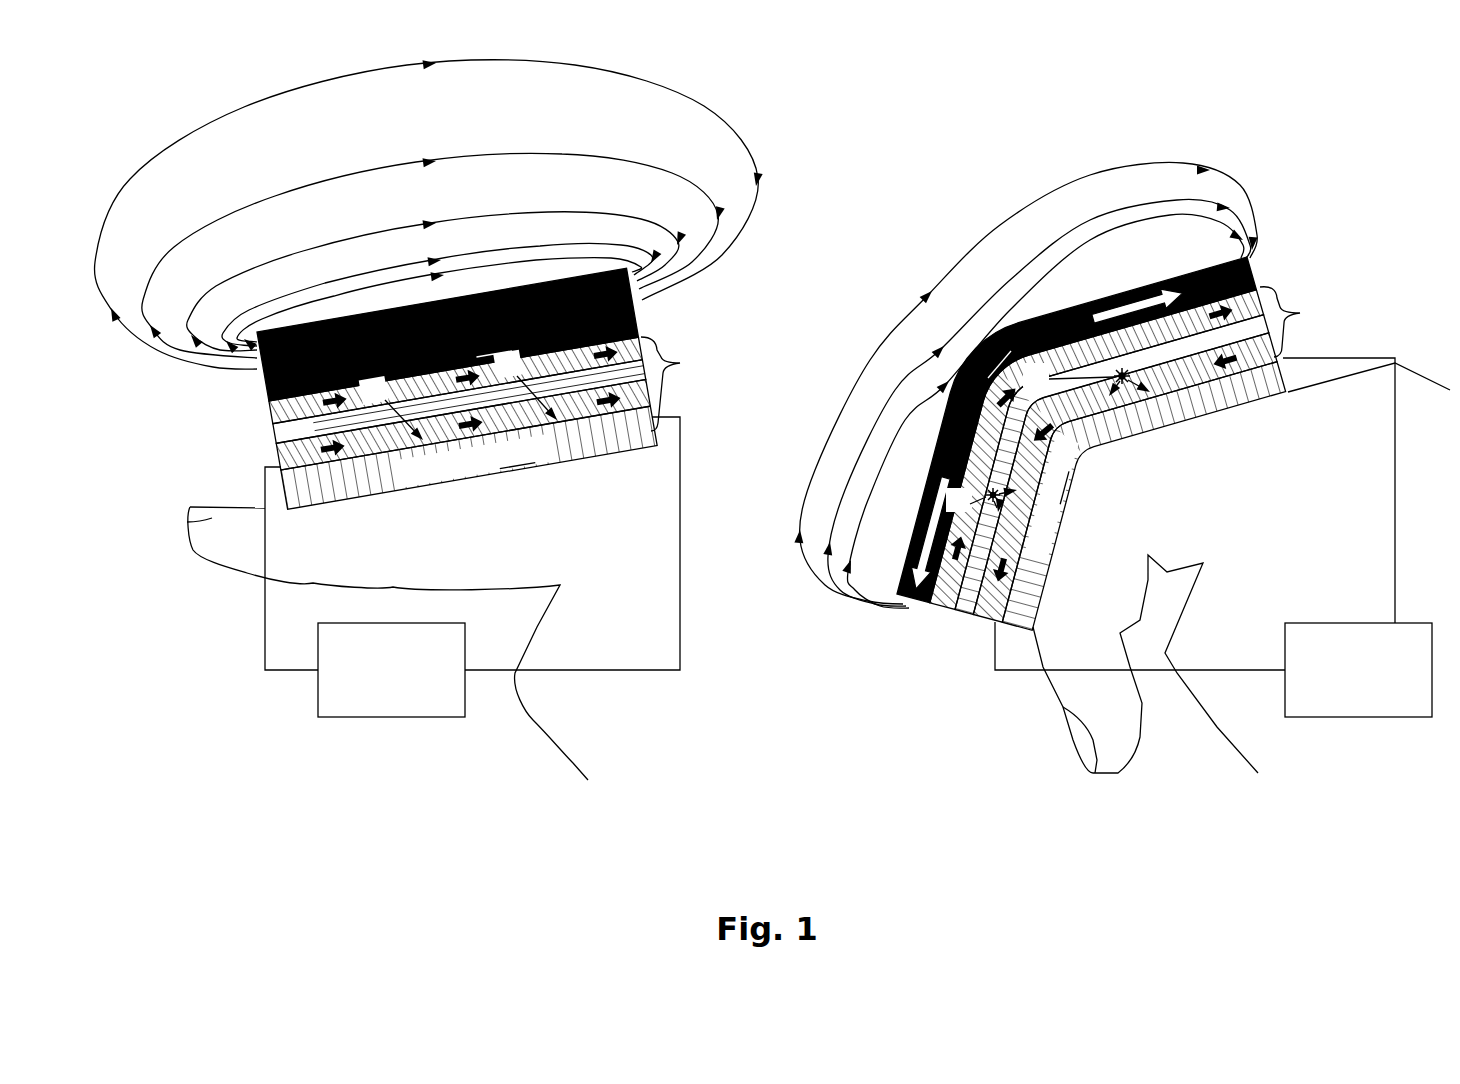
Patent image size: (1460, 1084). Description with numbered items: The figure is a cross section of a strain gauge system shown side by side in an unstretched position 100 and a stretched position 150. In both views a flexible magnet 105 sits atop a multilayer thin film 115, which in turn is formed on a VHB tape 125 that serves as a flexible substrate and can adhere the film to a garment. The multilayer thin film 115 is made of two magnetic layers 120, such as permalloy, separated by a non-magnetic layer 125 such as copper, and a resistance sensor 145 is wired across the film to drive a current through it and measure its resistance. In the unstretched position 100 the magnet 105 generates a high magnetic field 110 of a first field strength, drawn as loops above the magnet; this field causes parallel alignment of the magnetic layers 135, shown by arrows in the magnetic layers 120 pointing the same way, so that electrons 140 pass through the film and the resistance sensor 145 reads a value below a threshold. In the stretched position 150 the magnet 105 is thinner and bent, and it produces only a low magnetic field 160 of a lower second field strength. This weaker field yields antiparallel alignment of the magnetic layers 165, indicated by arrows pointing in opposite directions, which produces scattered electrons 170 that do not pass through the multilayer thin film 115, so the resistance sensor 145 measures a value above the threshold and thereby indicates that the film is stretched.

The unstretched position 100 is at (448, 837).
The magnet 105 is at (756, 428).
The high magnetic field 110 is at (465, 145).
The multilayer thin film 115 is at (1039, 358).
The magnetic layers 120 is at (270, 411).
The non-magnetic layers / VHB tape 125 is at (282, 450).
The parallel alignment of the magnetic layers 135 is at (349, 422).
The electrons 140 is at (542, 422).
The resistance sensor 145 is at (1376, 703).
The stretched position 150 is at (1128, 837).
The low magnetic field 160 is at (1030, 192).
The antiparallel alignment of the magnetic layers 165 is at (1244, 318).
The scattered electrons 170 is at (1123, 473).